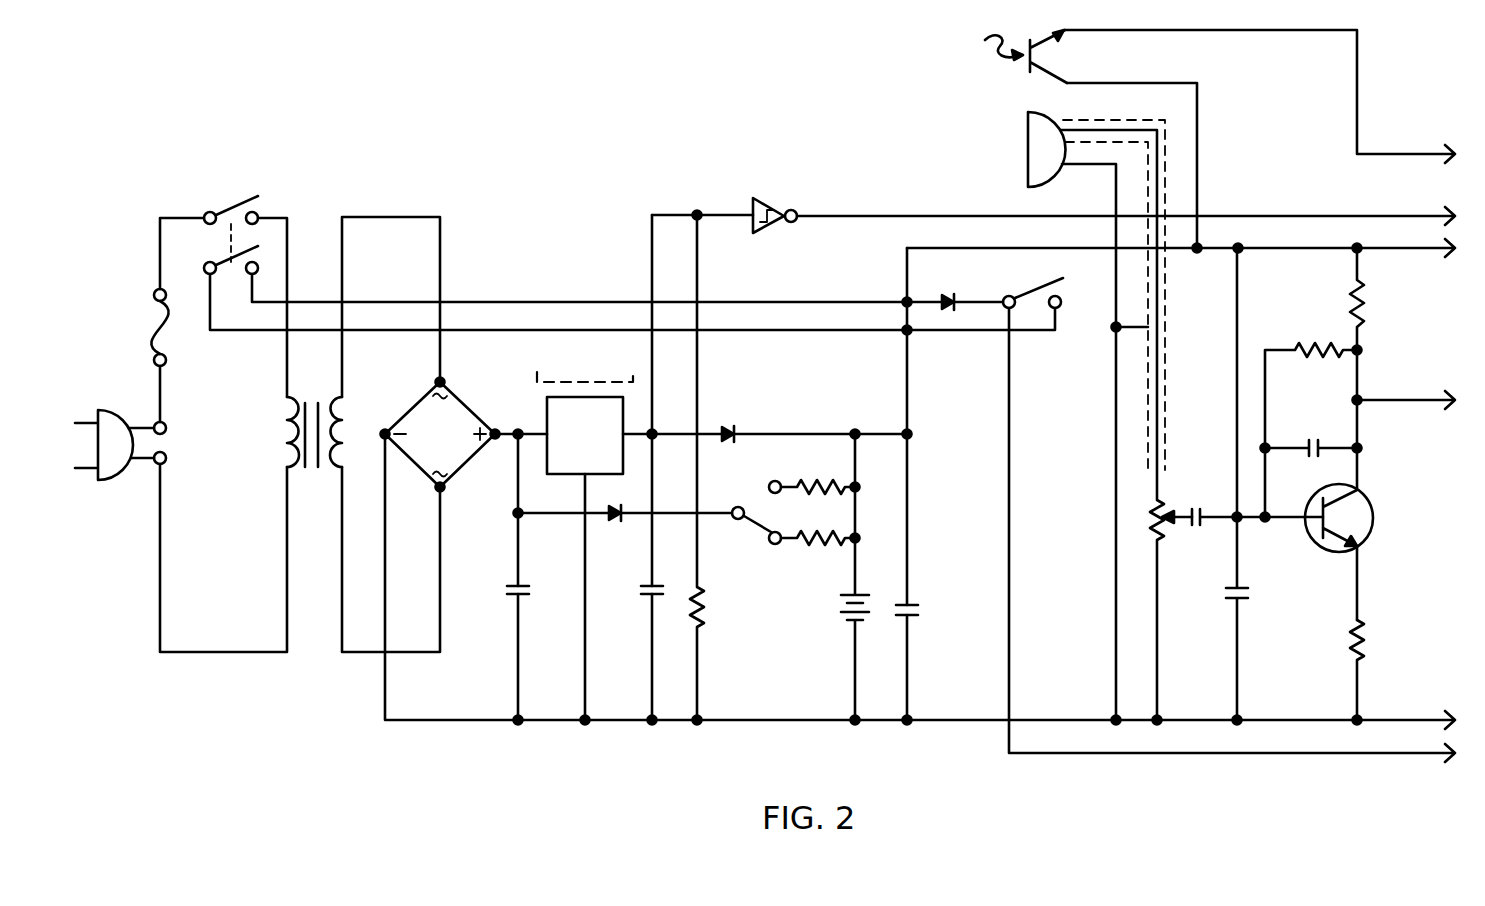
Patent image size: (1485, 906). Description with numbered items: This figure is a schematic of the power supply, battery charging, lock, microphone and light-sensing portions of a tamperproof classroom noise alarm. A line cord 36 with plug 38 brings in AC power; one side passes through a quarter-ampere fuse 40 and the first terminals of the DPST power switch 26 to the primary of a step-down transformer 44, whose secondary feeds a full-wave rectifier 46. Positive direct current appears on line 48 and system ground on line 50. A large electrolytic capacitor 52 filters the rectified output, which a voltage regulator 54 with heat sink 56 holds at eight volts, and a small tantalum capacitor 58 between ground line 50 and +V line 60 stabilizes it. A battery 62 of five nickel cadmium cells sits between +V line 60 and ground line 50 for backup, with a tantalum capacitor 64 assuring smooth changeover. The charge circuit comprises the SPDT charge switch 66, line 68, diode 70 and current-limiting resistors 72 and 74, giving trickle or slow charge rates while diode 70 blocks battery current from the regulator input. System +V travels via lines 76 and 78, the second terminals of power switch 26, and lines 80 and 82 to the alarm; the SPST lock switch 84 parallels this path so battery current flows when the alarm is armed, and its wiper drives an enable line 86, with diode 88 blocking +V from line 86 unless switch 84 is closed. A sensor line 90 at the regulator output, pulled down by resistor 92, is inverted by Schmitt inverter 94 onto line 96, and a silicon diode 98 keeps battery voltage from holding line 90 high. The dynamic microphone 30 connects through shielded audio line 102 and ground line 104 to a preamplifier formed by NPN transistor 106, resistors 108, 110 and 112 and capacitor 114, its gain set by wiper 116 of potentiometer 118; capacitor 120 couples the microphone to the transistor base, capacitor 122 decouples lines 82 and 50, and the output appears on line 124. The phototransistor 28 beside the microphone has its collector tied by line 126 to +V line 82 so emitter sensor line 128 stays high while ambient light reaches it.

The DPST power switch 26 is at (229, 190).
The phototransistor 28 is at (1005, 67).
The microphone 30 is at (1027, 151).
The line cord 36 is at (147, 468).
The plug 38 is at (138, 412).
The fuse 40 is at (153, 326).
The step-down transformer 44 is at (283, 418).
The full-wave rectifier 46 is at (413, 400).
The line 48 is at (516, 441).
The system ground line 50 is at (384, 700).
The electrolytic capacitor 52 is at (517, 582).
The voltage regulator 54 is at (546, 418).
The heat sink 56 is at (536, 372).
The tantalum capacitor 58 is at (651, 598).
The +V line 60 is at (844, 431).
The battery 62 is at (846, 613).
The tantalum capacitor 64 is at (912, 618).
The charge switch 66 is at (762, 531).
The line 68 is at (576, 516).
The diode 70 is at (630, 521).
The current-limiting resistor 72 is at (839, 543).
The current-limiting resistor 74 is at (830, 480).
The line 76 is at (906, 393).
The line 78 is at (846, 333).
The line 80 is at (541, 300).
The +V line 82 is at (1318, 246).
The lock switch 84 is at (1038, 285).
The enable line 86 is at (1010, 408).
The diode 88 is at (950, 297).
The voltage sensor line 90 is at (655, 282).
The pull-down resistor 92 is at (704, 606).
The Schmitt inverter 94 is at (771, 199).
The line 96 is at (1422, 213).
The silicon diode 98 is at (738, 429).
The shielded audio line 102 is at (1158, 351).
The ground line 104 is at (1114, 600).
The NPN transistor 106 is at (1335, 550).
The resistor 108 is at (1352, 300).
The resistor 110 is at (1303, 343).
The resistor 112 is at (1352, 646).
The capacitor 114 is at (1320, 438).
The wiper 116 is at (1184, 500).
The potentiometer 118 is at (1163, 538).
The capacitor 120 is at (1226, 524).
The capacitor 122 is at (1236, 600).
The line 124 is at (1420, 398).
The line 126 is at (1200, 140).
The emitter sensor line 128 is at (1420, 152).